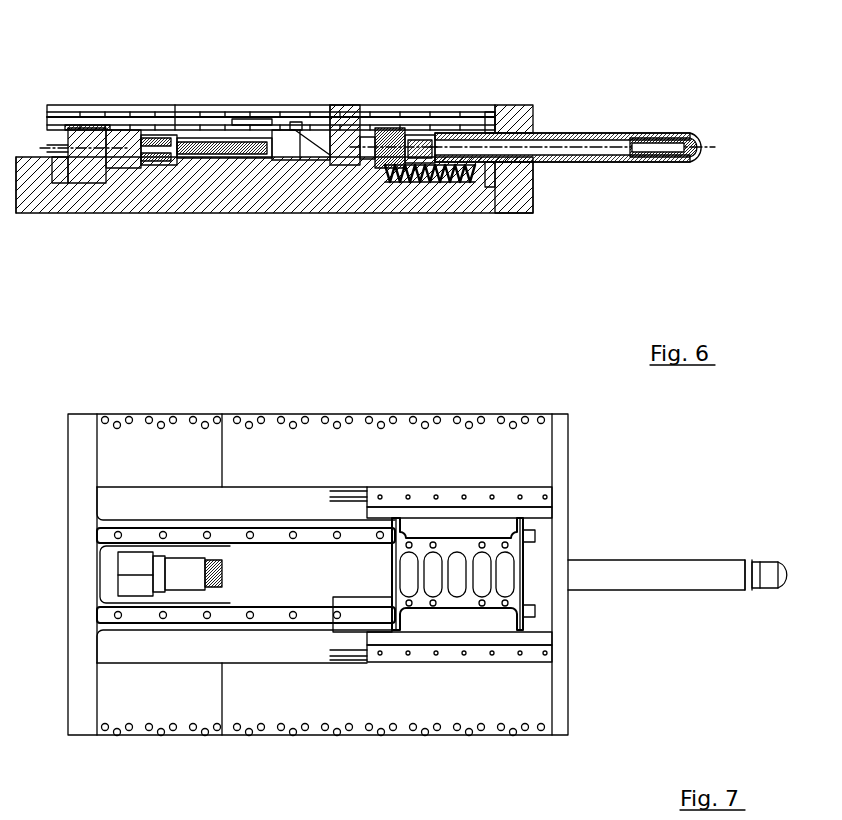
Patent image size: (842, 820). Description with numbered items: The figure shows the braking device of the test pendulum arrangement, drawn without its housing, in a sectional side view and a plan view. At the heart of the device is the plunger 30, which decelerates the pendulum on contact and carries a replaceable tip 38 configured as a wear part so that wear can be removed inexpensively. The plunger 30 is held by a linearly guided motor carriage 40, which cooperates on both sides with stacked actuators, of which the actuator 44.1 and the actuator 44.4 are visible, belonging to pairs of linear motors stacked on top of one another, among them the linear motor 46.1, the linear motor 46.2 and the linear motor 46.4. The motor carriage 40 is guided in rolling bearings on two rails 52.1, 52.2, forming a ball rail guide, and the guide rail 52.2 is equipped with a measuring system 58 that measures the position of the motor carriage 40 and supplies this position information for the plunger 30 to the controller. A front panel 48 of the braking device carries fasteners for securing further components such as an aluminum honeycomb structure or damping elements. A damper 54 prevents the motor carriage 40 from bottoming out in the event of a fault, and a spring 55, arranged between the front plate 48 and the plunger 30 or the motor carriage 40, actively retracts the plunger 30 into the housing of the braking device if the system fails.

In FIG. 6, the plunger 30 is at (564, 135).
In FIG. 7, the plunger 30 is at (664, 578).
In FIG. 6, the replaceable tip 38 is at (695, 140).
In FIG. 7, the replaceable tip 38 is at (777, 570).
In FIG. 6, the motor carriage 40 is at (355, 130).
In FIG. 7, the motor carriage 40 is at (427, 540).
In FIG. 7, the actuator 44.1 is at (418, 495).
In FIG. 7, the actuator 44.4 is at (445, 655).
In FIG. 6, the linear motor 46.1 is at (185, 115).
In FIG. 7, the linear motor 46.1 is at (148, 480).
In FIG. 6, the linear motor 46.2 is at (66, 128).
In FIG. 7, the linear motor 46.4 is at (250, 705).
In FIG. 6, the front panel 48 is at (520, 206).
In FIG. 7, the front panel 48 is at (560, 636).
In FIG. 7, the rail 52.1 is at (228, 535).
In FIG. 7, the guide rail 52.2 is at (305, 617).
In FIG. 6, the damper 54 is at (130, 175).
In FIG. 7, the damper 54 is at (193, 585).
In FIG. 6, the spring 55 is at (441, 185).
In FIG. 7, the measuring system 58 is at (373, 617).